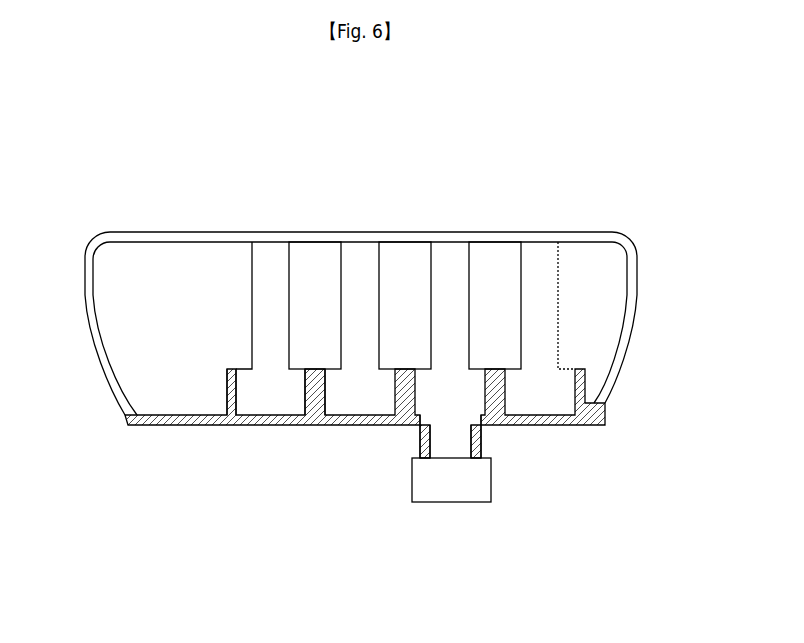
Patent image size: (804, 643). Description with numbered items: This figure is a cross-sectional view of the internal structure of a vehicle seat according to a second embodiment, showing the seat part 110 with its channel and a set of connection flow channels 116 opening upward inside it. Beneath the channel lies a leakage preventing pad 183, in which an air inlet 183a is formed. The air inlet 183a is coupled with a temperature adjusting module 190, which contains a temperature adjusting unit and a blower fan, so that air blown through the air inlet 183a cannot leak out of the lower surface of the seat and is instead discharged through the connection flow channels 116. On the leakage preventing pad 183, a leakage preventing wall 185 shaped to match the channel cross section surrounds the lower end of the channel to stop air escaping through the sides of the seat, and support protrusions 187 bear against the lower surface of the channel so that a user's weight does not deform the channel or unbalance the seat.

The seat part 110 is at (195, 230).
The connection flow channels 116 is at (360, 249).
The leakage preventing pad 183 is at (208, 425).
The leakage preventing wall 185 is at (223, 387).
The support protrusions 187 is at (313, 403).
The air inlet 183a is at (459, 441).
The temperature adjusting module 190 is at (452, 490).